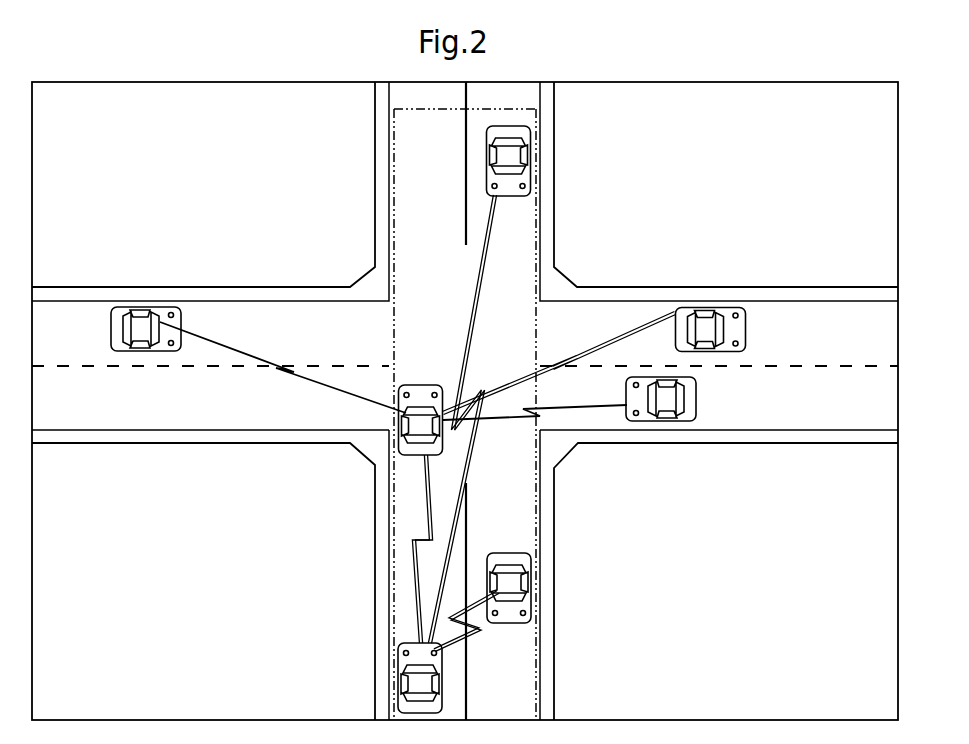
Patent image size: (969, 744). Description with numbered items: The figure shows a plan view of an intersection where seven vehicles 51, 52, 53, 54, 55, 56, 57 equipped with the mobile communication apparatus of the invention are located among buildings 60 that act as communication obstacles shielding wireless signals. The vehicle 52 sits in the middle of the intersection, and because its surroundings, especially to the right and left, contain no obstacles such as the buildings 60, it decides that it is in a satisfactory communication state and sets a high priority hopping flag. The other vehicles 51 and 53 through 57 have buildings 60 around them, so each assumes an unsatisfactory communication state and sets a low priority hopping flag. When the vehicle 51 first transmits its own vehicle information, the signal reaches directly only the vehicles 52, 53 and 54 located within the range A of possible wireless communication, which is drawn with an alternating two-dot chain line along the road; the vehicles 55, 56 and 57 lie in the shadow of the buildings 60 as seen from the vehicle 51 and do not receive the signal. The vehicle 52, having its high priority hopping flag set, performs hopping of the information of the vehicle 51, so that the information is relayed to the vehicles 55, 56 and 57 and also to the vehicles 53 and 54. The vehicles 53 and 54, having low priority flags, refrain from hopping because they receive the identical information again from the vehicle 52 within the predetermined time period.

The vehicle 51 is at (400, 688).
The vehicle 52 is at (402, 450).
The vehicle 53 is at (531, 596).
The vehicle 54 is at (531, 152).
The vehicle 55 is at (163, 308).
The vehicle 56 is at (713, 307).
The vehicle 57 is at (673, 422).
The building 60 is at (184, 148).
The range of possible wireless communication A is at (394, 333).